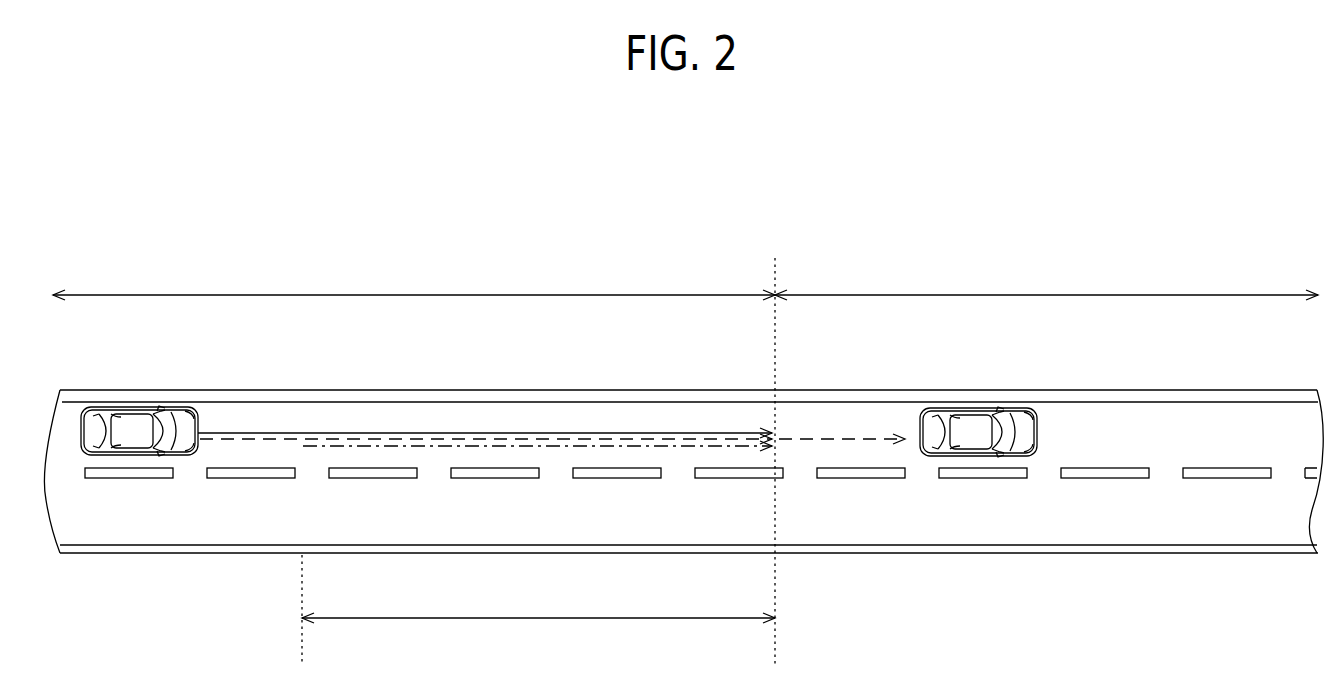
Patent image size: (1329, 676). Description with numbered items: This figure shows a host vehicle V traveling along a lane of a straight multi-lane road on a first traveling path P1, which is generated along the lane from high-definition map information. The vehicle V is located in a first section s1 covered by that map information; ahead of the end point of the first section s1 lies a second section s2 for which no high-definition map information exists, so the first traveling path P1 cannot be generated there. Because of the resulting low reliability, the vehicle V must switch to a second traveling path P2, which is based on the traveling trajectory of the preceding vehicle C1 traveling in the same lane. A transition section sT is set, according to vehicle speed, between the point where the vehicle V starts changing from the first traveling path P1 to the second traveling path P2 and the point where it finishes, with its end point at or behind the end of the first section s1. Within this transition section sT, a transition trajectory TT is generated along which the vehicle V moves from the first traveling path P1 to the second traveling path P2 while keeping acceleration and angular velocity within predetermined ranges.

The vehicle V is at (124, 430).
The first traveling path P1 is at (260, 432).
The transition trajectory TT is at (500, 445).
The second traveling path P2 is at (841, 438).
The preceding vehicle C1 is at (978, 432).
The first section s1 is at (414, 283).
The second section s2 is at (1046, 283).
The transition section sT is at (538, 636).